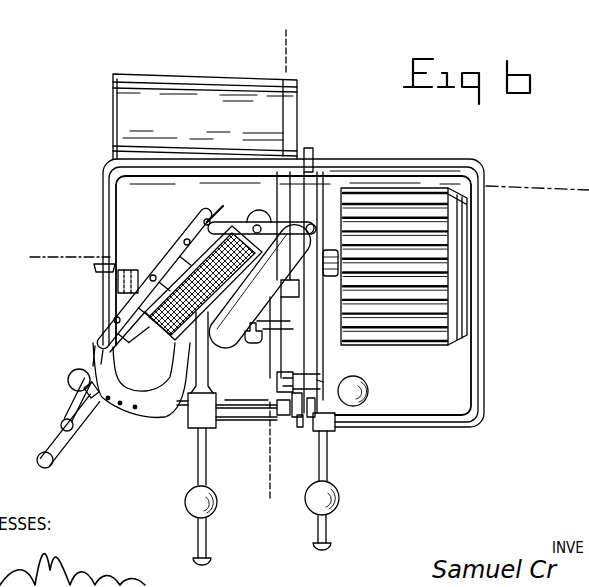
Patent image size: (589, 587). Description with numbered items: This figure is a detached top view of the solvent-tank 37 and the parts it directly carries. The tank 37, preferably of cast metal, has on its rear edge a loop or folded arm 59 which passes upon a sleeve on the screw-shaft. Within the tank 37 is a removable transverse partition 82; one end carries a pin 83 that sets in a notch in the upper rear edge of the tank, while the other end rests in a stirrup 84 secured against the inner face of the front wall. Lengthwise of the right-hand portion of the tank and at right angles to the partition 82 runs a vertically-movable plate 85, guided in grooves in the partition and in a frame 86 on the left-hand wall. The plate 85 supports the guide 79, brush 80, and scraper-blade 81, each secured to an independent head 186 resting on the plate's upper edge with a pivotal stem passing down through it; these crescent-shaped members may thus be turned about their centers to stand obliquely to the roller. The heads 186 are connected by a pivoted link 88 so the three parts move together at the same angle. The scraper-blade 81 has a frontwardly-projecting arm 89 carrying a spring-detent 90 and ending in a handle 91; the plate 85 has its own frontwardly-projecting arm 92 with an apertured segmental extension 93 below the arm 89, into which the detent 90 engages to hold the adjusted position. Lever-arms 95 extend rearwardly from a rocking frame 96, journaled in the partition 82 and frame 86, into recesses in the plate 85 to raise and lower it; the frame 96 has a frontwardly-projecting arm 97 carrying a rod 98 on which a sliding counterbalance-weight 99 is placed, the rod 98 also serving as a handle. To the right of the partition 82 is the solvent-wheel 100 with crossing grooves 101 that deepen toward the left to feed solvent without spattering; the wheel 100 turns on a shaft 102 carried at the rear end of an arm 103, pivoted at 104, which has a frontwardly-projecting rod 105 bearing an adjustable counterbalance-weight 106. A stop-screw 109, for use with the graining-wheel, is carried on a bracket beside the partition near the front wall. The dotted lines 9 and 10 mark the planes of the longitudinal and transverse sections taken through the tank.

The section line 9 9 is at (62, 255).
The section line 10 10 is at (280, 265).
The solvent-tank 37 is at (484, 378).
The loop or folded arm 59 is at (205, 116).
The guide 79 is at (234, 341).
The brush 80 is at (162, 336).
The scraper-blade 81 is at (96, 333).
The transverse partition 82 is at (308, 198).
The pin 83 is at (313, 156).
The stirrup 84 is at (300, 420).
The vertically-movable plate 85 is at (138, 272).
The frame 86 is at (96, 270).
The pivoted link 88 is at (243, 223).
The frontwardly-projecting arm 89 is at (100, 360).
The spring-detent 90 is at (86, 414).
The handle 91 is at (50, 444).
The frontwardly-projecting arm 92 is at (141, 380).
The segmental extension 93 is at (136, 412).
The lever-arms 95 is at (272, 330).
The rocking frame 96 is at (269, 344).
The frontwardly-projecting arm 97 is at (214, 429).
The rod 98 is at (207, 533).
The counterbalance-weight 99 is at (192, 500).
The solvent-wheel 100 is at (430, 343).
The grooves 101 is at (407, 322).
The shaft 102 is at (318, 240).
The arm 103 is at (325, 385).
The pivot 104 is at (276, 385).
The frontwardly-projecting rod 105 is at (329, 456).
The adjustable counterbalance-weight 106 is at (340, 499).
The stop-screw 109 is at (368, 392).
The heads 186 is at (178, 244).